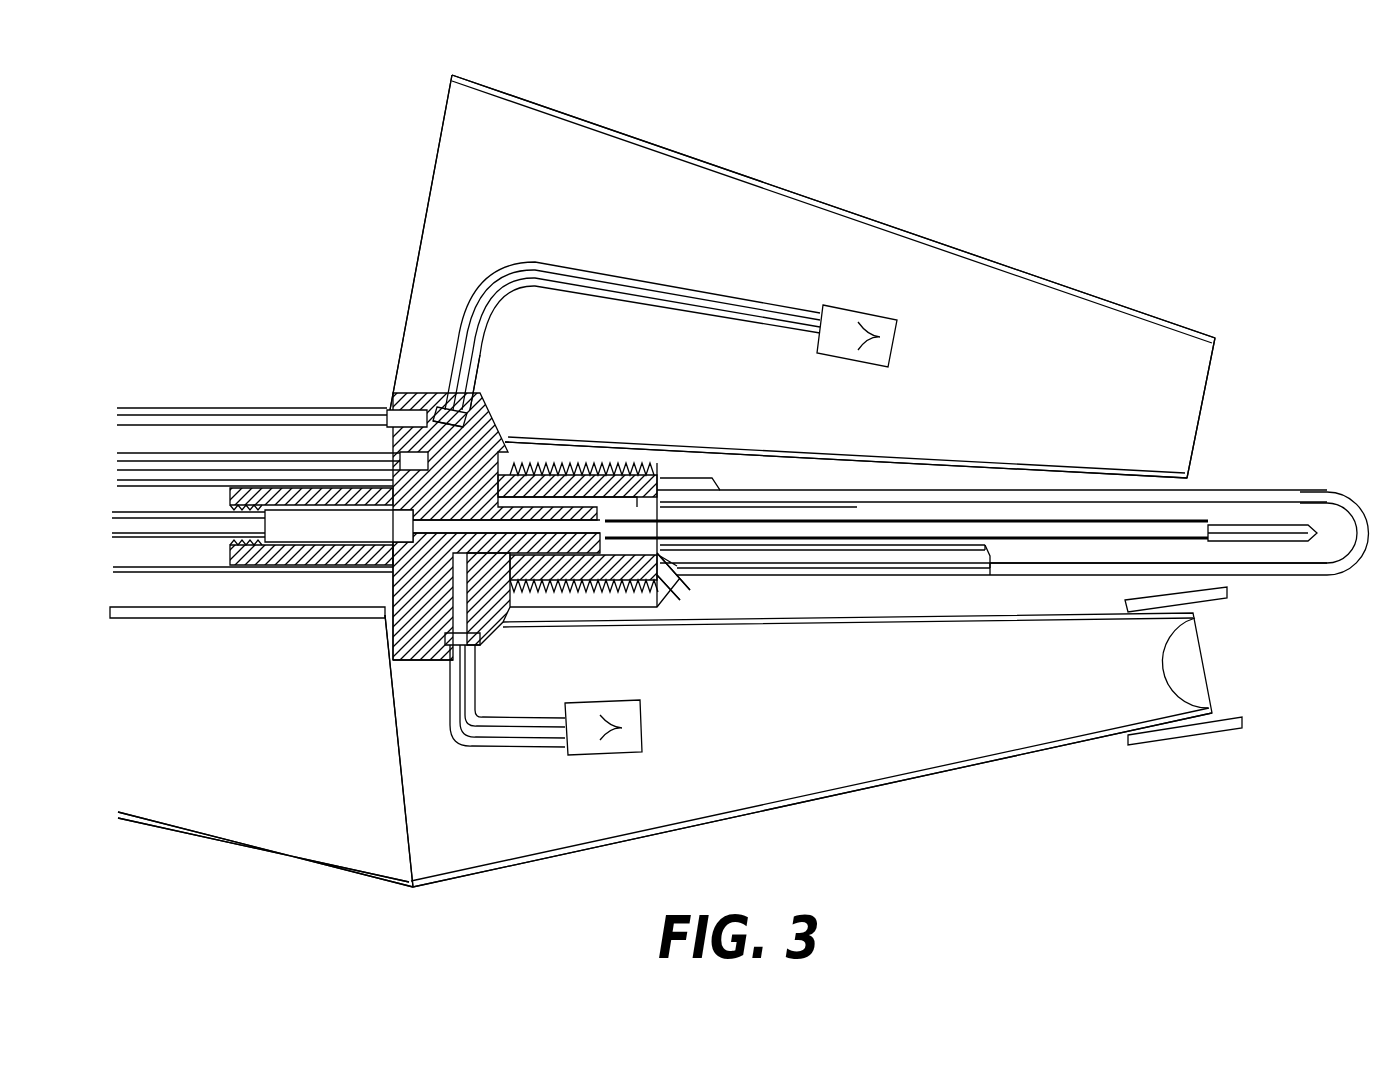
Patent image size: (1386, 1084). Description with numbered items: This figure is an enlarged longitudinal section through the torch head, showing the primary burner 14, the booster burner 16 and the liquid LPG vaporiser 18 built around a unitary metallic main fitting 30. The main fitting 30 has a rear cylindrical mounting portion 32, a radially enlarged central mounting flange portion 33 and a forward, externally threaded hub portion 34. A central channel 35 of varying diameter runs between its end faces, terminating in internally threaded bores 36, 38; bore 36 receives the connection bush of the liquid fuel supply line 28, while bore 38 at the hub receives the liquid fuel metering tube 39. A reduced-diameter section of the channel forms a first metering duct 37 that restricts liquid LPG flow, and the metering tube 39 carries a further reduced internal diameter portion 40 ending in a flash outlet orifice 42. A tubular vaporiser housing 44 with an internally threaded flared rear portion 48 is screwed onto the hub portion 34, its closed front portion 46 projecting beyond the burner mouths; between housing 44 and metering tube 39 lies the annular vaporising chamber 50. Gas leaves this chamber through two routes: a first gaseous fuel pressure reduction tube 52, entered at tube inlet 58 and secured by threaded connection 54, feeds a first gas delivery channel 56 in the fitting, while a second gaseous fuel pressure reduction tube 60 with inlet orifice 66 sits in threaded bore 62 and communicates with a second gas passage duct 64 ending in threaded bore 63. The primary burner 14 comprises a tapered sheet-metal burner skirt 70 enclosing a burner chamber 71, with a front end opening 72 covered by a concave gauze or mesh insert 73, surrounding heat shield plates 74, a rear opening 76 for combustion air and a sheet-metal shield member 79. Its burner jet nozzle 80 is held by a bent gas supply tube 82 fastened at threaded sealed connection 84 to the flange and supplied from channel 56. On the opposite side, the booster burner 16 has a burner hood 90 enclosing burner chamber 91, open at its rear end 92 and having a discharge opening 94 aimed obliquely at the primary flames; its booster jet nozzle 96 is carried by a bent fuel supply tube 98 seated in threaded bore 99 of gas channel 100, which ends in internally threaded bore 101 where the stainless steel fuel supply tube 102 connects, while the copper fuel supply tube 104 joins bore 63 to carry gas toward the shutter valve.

The primary burner 14 is at (958, 788).
The booster burner 16 is at (1068, 250).
The liquid LPG vaporiser 18 is at (773, 476).
The liquid fuel supply line 28 is at (165, 540).
The main fitting 30 is at (492, 432).
The rear cylindrical mounting portion 32 is at (328, 545).
The central mounting flange portion 33 is at (395, 640).
The forward hub portion 34 is at (560, 592).
The central channel 35 is at (300, 535).
The internally threaded bore 36 is at (234, 540).
The first metering duct 37 is at (393, 630).
The internally threaded bore 38 is at (662, 552).
The liquid fuel metering tube 39 is at (1058, 550).
The reduced internal diameter portion 40 is at (1252, 522).
The flash outlet orifice 42 is at (1320, 528).
The tubular vaporiser housing 44 is at (748, 574).
The front portion of housing 46 is at (1330, 570).
The flared rear portion 48 is at (622, 596).
The vaporising chamber 50 is at (980, 518).
The first gaseous fuel pressure reduction tube 52 is at (843, 553).
The threaded connection 54 is at (648, 558).
The first gas delivery channel 56 is at (445, 645).
The tube inlet 58 is at (990, 572).
The second gaseous fuel pressure reduction tube 60 is at (722, 490).
The threaded bore 62 is at (652, 472).
The threaded bore 63 is at (393, 415).
The second gas passage duct 64 is at (583, 466).
The inlet orifice 66 is at (858, 502).
The burner skirt 70 is at (490, 638).
The burner chamber 71 is at (798, 726).
The front end opening 72 is at (1207, 657).
The gauze or mesh insert 73 is at (1153, 680).
The heat shield plates 74 is at (1183, 737).
The rear opening 76 is at (408, 815).
The sheet-metal shield member 79 is at (273, 855).
The burner jet nozzle 80 is at (610, 752).
The bent gas supply tube 82 is at (455, 750).
The threaded sealed connection 84 is at (458, 700).
The burner hood 90 is at (945, 243).
The burner chamber 91 is at (928, 361).
The rear end 92 is at (426, 193).
The discharge opening 94 is at (1215, 355).
The booster jet nozzle 96 is at (830, 306).
The bent fuel supply tube 98 is at (530, 262).
The threaded bore 99 is at (497, 418).
The gas channel 100 is at (446, 406).
The internally threaded bore 101 is at (436, 410).
The stainless steel fuel supply tube 102 is at (178, 408).
The copper fuel supply tube 104 is at (250, 452).